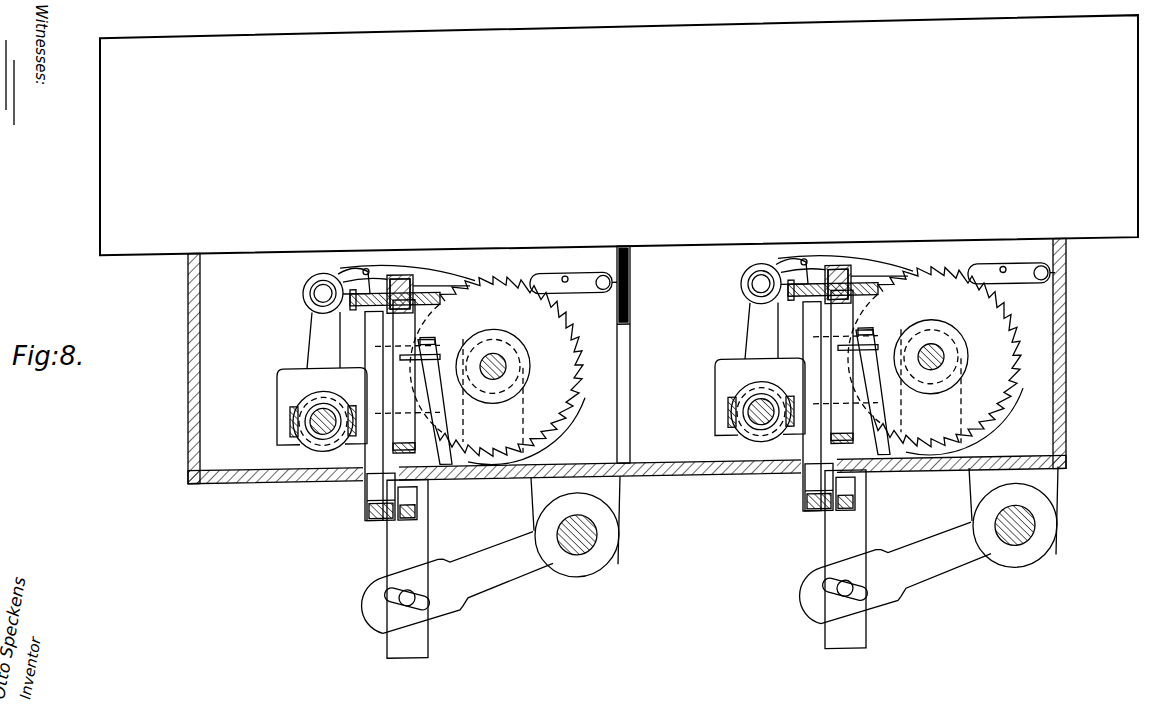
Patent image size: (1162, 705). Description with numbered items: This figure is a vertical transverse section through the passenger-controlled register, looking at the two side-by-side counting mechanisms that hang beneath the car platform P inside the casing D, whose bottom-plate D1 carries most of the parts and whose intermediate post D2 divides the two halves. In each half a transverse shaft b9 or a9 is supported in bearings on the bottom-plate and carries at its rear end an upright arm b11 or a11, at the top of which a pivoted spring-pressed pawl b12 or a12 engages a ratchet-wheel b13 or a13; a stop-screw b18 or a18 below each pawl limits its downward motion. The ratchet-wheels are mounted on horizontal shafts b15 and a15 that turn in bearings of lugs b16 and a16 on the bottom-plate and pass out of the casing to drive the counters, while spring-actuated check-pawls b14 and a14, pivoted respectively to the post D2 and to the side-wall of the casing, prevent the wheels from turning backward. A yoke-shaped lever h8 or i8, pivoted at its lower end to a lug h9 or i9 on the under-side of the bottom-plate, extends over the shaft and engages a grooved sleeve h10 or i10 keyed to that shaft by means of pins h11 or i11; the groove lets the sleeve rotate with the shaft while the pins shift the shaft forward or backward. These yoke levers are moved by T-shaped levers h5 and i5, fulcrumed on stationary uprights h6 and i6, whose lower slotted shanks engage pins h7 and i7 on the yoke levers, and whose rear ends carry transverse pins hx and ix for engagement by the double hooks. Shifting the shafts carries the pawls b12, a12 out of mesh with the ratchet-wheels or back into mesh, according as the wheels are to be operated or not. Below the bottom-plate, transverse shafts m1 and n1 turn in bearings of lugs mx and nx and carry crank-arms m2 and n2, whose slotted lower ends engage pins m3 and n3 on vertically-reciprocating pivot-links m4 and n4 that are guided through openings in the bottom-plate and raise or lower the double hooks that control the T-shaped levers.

The platform P is at (619, 135).
The casing D is at (190, 389).
The bottom-plate D1 is at (706, 486).
The intermediate post D2 is at (630, 315).
The stop-screw b18 is at (368, 276).
The upright arm b11 is at (335, 343).
The yoke-shaped lever h8 is at (368, 340).
The pin h11 is at (320, 428).
The sleeve h10 is at (333, 456).
The transverse shaft b9 is at (322, 434).
The T-shaped lever h5 is at (404, 283).
The transverse pin hx is at (372, 292).
The pawl b12 is at (435, 281).
The pin h7 is at (430, 412).
The stationary upright h6 is at (430, 346).
The ratchet-wheel b13 is at (496, 366).
The horizontal shaft b15 is at (507, 376).
The lug b16 is at (562, 418).
The check-pawl b14 is at (556, 283).
The lug h9 is at (400, 511).
The transverse shaft m1 is at (615, 551).
The lug mx is at (548, 509).
The crank-arm m2 is at (497, 584).
The pin m3 is at (408, 608).
The pivot-link m4 is at (410, 549).
The stop-screw a18 is at (739, 283).
The upright arm a11 is at (765, 308).
The yoke-shaped lever i8 is at (763, 406).
The pin i11 is at (726, 412).
The sleeve i10 is at (739, 459).
The transverse shaft a9 is at (747, 454).
The T-shaped lever i5 is at (848, 338).
The transverse pin ix is at (835, 260).
The pawl a12 is at (845, 247).
The pin i7 is at (873, 372).
The stationary upright i6 is at (853, 362).
The ratchet-wheel a13 is at (934, 356).
The horizontal shaft a15 is at (947, 357).
The lug a16 is at (966, 421).
The check-pawl a14 is at (1011, 250).
The lug i9 is at (863, 493).
The transverse shaft n1 is at (1015, 539).
The lug nx is at (999, 512).
The crank-arm n2 is at (864, 573).
The pin n3 is at (865, 600).
The pivot-link n4 is at (828, 572).